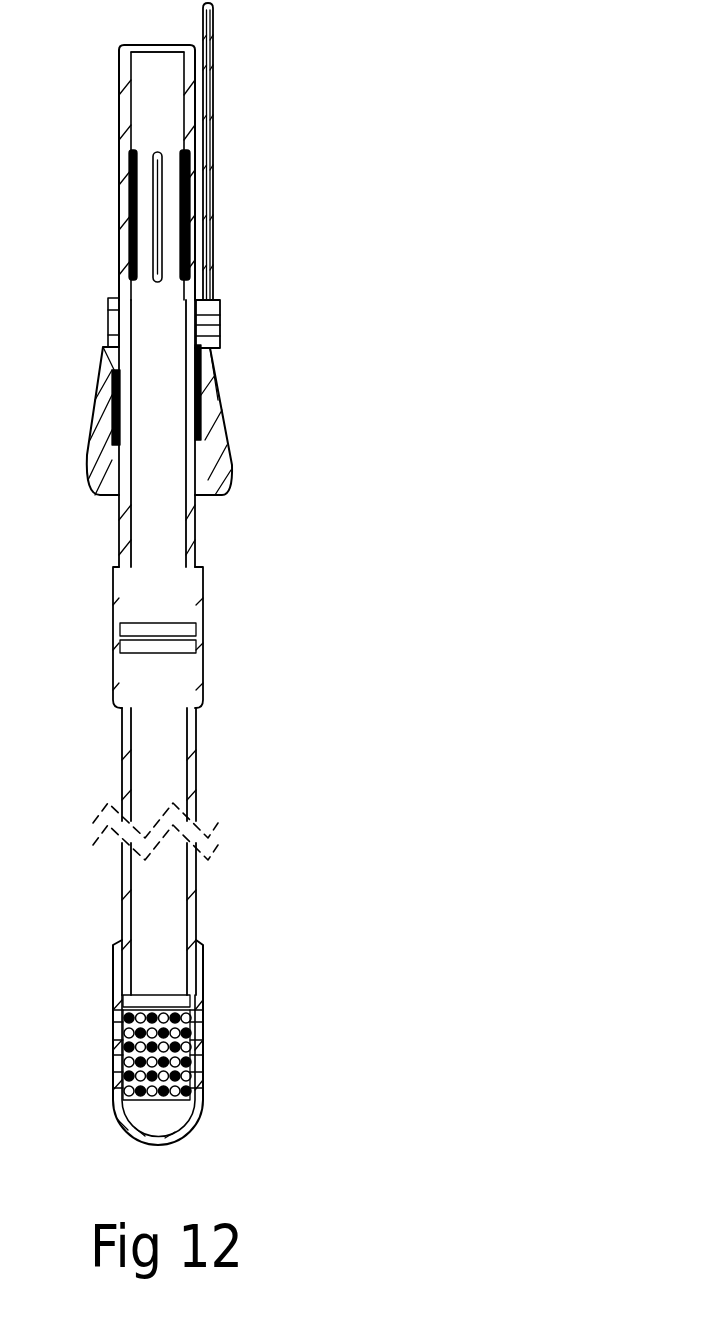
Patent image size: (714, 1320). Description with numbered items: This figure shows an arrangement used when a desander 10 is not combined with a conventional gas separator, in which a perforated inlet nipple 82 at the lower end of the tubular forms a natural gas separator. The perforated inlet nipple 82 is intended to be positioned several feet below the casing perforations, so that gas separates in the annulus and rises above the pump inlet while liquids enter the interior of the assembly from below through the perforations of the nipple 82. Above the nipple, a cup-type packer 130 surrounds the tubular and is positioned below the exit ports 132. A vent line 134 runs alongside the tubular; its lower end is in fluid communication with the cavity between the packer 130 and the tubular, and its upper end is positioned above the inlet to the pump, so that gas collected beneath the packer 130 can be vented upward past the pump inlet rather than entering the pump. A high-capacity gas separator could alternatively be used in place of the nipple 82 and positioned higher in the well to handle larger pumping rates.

The desander 10 is at (324, 574).
The perforated inlet nipple 82 is at (195, 1062).
The cup-type packer 130 is at (215, 408).
The exit ports 132 is at (166, 199).
The vent line 134 is at (213, 62).